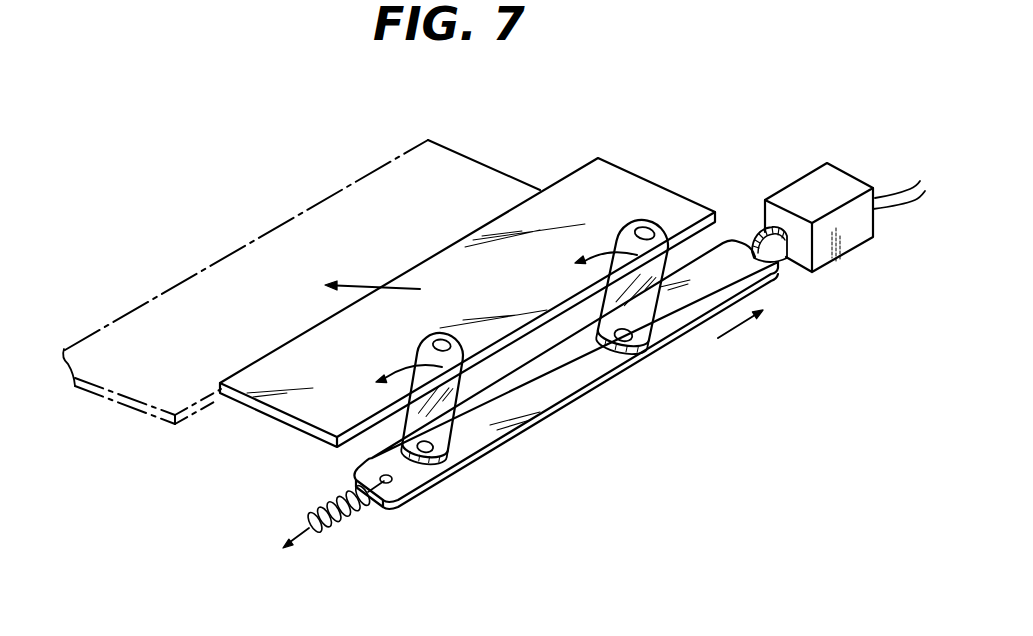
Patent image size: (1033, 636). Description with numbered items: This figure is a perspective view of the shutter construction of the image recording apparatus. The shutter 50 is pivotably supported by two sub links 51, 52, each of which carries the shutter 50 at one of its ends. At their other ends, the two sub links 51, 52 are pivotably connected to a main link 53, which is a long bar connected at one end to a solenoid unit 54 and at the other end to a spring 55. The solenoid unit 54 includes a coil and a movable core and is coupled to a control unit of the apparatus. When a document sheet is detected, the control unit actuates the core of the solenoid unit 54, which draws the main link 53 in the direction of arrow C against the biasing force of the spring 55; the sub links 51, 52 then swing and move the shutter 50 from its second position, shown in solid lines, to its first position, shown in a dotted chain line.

The shutter 50 is at (477, 175).
The sub link 51 is at (450, 418).
The sub link 52 is at (645, 312).
The main link 53 is at (583, 390).
The solenoid unit 54 is at (805, 185).
The spring 55 is at (350, 527).